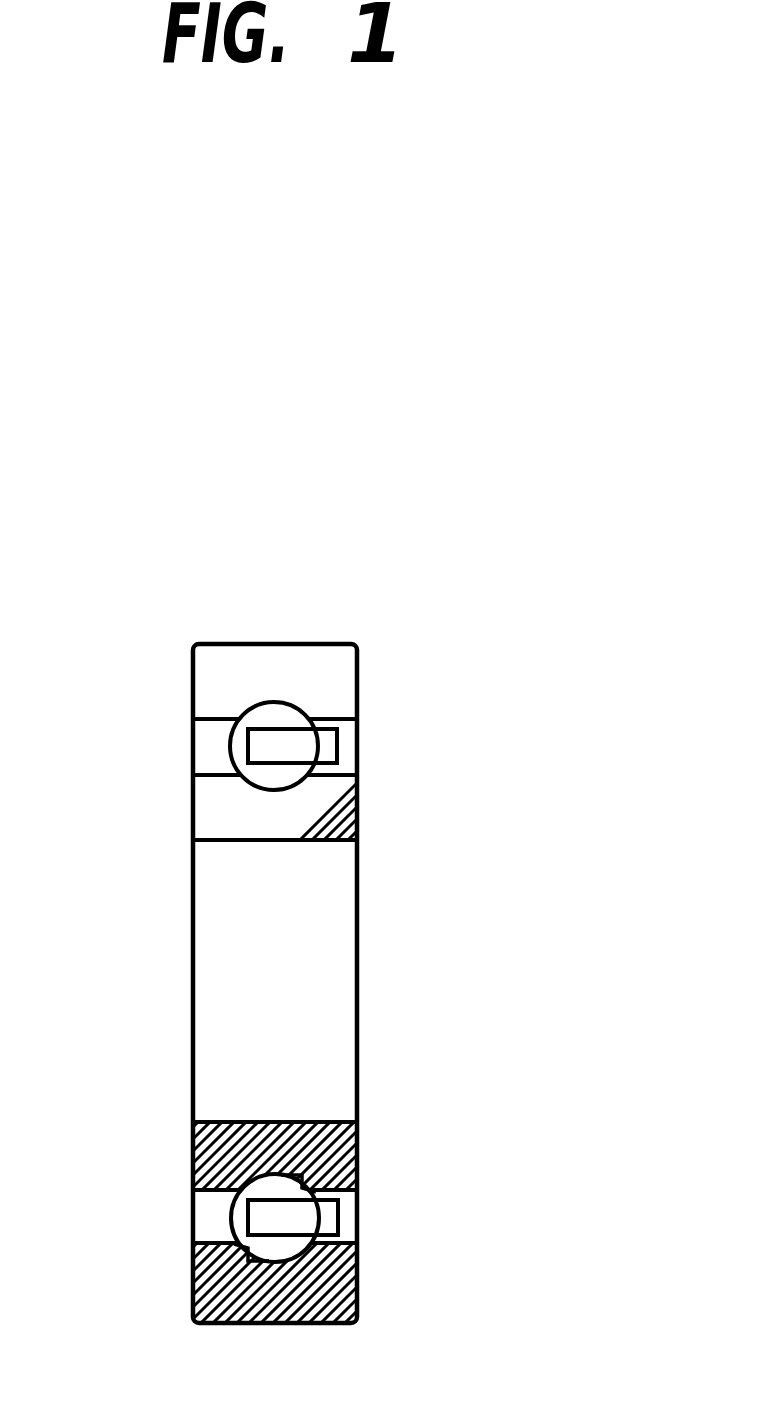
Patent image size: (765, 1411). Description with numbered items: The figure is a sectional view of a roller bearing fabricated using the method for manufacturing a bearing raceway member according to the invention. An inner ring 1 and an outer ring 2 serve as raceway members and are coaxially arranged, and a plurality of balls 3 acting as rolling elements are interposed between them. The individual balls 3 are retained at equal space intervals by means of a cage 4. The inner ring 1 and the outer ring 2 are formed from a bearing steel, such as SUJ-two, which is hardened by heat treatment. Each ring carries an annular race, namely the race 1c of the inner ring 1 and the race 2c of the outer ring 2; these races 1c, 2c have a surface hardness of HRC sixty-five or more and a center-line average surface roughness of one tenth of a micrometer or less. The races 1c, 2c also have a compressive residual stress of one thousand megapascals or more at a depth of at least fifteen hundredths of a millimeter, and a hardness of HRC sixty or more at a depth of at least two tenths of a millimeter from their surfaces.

The inner ring 1 is at (345, 813).
The annular race of the inner ring 1c is at (310, 1186).
The outer ring 2 is at (310, 643).
The annular race of the outer ring 2c is at (238, 1247).
The ball 3 is at (224, 753).
The cage 4 is at (333, 746).